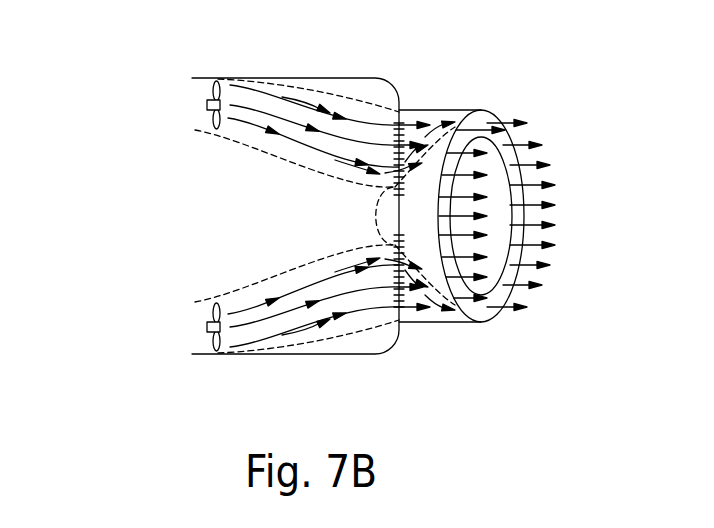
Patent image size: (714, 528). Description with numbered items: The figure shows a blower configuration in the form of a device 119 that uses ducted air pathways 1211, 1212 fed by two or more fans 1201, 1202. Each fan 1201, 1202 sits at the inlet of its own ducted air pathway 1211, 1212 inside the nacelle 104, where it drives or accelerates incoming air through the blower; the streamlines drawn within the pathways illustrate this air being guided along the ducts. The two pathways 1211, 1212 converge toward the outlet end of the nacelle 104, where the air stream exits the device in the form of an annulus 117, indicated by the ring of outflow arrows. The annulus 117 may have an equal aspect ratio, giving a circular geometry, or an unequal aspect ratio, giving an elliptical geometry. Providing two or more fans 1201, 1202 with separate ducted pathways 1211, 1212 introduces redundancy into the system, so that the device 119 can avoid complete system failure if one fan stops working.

The nacelle 104 is at (323, 78).
The ducted air pathway 1211 is at (362, 93).
The ducted air pathway 1212 is at (362, 342).
The fan 1201 is at (207, 105).
The fan 1202 is at (207, 327).
The annulus 117 is at (488, 317).
The device 119 is at (445, 92).